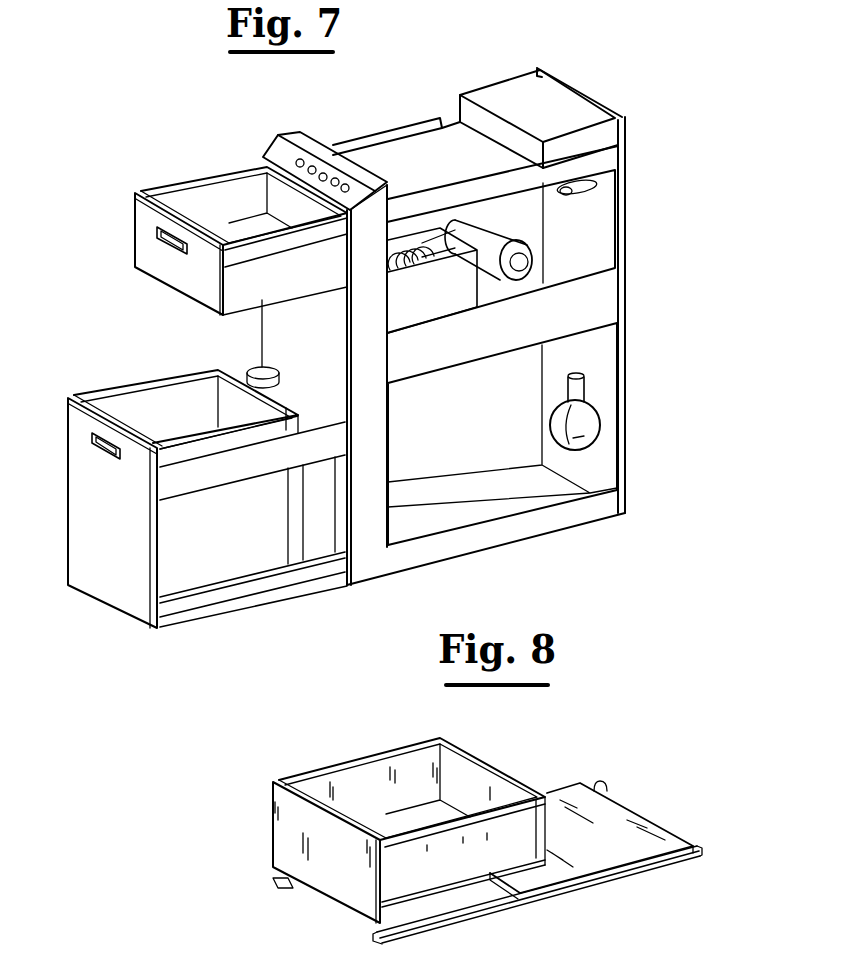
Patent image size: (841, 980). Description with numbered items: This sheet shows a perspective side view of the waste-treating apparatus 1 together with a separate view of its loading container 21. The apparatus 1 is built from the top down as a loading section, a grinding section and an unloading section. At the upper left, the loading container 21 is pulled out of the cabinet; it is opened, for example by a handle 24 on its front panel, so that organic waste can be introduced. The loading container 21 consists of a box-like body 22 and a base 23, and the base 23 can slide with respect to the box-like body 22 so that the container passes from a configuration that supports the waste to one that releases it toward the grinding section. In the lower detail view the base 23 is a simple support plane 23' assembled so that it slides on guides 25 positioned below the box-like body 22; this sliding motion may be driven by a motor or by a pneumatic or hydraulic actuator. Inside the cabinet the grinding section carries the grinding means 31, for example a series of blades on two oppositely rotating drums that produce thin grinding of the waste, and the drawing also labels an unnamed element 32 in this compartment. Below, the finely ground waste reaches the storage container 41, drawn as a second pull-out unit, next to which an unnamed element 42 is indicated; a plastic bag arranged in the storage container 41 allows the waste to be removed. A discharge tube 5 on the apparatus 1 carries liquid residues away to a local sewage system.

In FIG. 7, the apparatus 1 is at (676, 399).
In FIG. 7, the discharge tube 5 is at (617, 442).
In FIG. 7, the loading container 21 is at (127, 156).
In FIG. 7, the box-like body 22 is at (211, 197).
In FIG. 8, the box-like body 22 is at (280, 837).
In FIG. 7, the base 23 is at (279, 290).
In FIG. 8, the base 23 is at (632, 821).
In FIG. 8, the support plane 23' is at (628, 760).
In FIG. 7, the handle 24 is at (173, 247).
In FIG. 8, the guides 25 is at (478, 920).
In FIG. 7, the grinding means 31 is at (405, 214).
In FIG. 7, the motor 32 is at (522, 262).
In FIG. 7, the storage container 41 is at (195, 568).
In FIG. 7, the carriage rail 42 is at (293, 577).